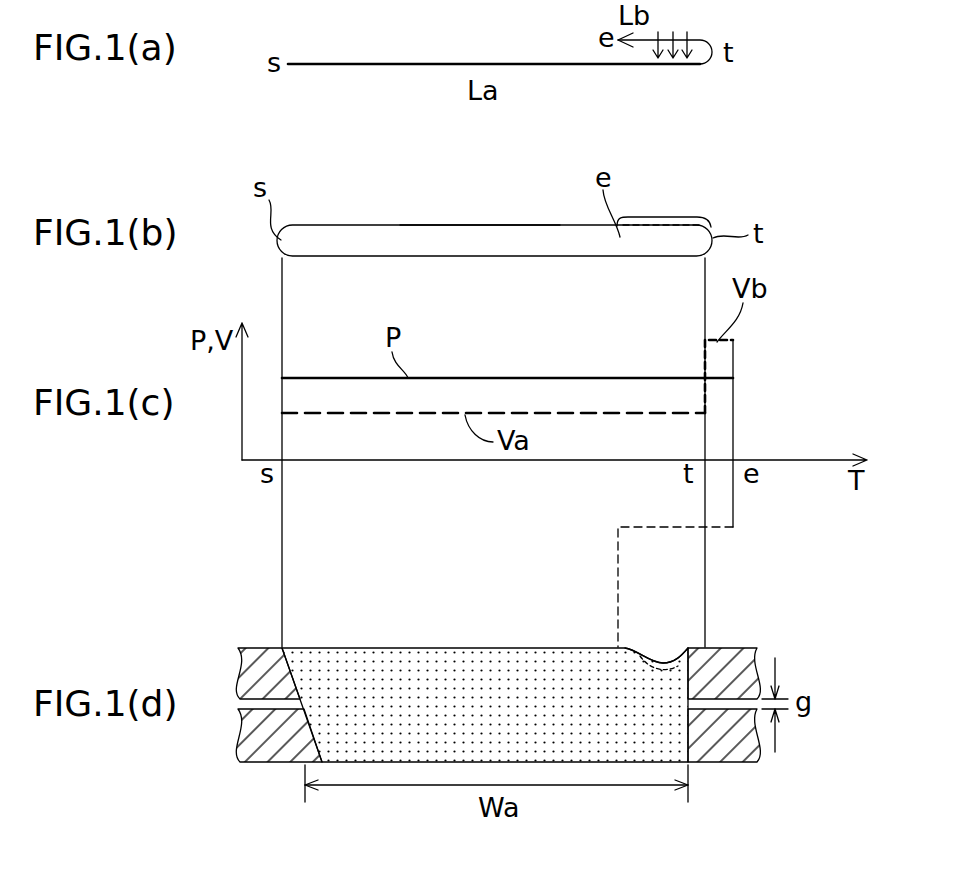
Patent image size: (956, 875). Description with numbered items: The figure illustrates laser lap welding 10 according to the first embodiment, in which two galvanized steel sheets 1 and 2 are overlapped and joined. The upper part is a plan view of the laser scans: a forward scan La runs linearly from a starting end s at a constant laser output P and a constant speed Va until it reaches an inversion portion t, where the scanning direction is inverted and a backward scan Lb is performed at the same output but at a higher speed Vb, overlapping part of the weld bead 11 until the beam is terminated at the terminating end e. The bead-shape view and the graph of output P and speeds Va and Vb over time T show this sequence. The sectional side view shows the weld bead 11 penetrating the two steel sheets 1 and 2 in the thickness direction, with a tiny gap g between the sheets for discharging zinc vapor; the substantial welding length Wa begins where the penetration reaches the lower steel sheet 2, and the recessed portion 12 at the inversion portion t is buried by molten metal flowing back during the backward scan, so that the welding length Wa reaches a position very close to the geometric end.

In FIG. 1D, the steel sheet 1 is at (742, 673).
In FIG. 1D, the steel sheet 2 is at (743, 734).
In FIG. 1A, the laser lap welding 10 is at (395, 55).
In FIG. 1B, the laser lap welding 10 is at (508, 204).
In FIG. 1D, the laser lap welding 10 is at (485, 675).
In FIG. 1B, the weld bead 11 is at (477, 240).
In FIG. 1D, the weld bead 11 is at (482, 663).
In FIG. 1B, the recessed portion 12 is at (663, 215).
In FIG. 1D, the recessed portion 12 is at (652, 657).